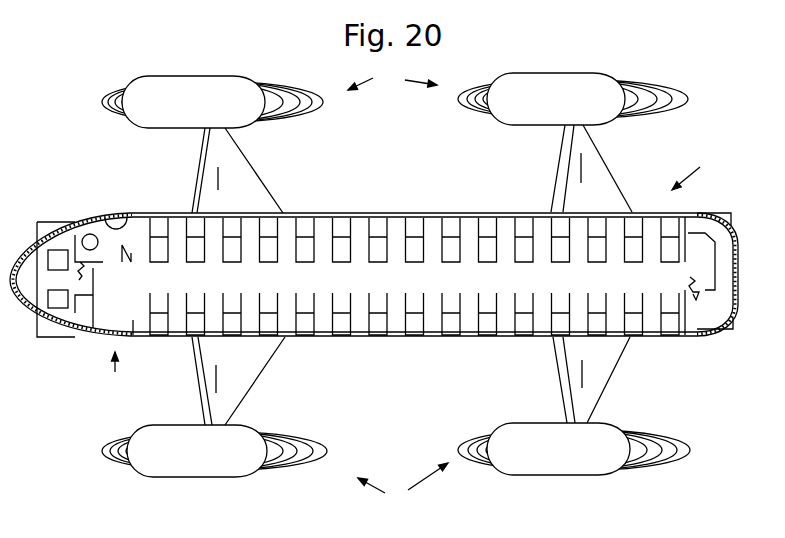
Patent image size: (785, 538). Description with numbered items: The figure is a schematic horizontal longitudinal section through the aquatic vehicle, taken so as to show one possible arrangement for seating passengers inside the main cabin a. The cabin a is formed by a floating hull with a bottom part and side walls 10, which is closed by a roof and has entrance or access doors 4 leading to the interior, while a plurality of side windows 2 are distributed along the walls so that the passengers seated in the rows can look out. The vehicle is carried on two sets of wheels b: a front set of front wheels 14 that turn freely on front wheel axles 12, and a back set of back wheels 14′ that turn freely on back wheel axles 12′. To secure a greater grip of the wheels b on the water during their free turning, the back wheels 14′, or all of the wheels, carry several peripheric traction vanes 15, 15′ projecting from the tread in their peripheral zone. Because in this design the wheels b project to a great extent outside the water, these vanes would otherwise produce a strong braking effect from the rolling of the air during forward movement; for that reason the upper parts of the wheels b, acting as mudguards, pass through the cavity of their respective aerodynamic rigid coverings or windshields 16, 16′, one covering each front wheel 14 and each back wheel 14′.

The side windows 2 is at (357, 213).
The doors 4 is at (110, 340).
The hull and walls of main cabin 10 is at (118, 213).
The front wheel axles 12 is at (218, 167).
The back wheel axles 12′ is at (570, 172).
The front wheels 14 is at (265, 112).
The back wheels 14′ is at (623, 82).
The peripheric traction vanes 15 is at (317, 121).
The peripheric traction vanes 15′ is at (685, 92).
The aerodynamic rigid covering of wheels 16 is at (220, 93).
The aerodynamic rigid covering of wheels 16′ is at (538, 82).
The main cabin a is at (697, 170).
The wheels b is at (398, 288).